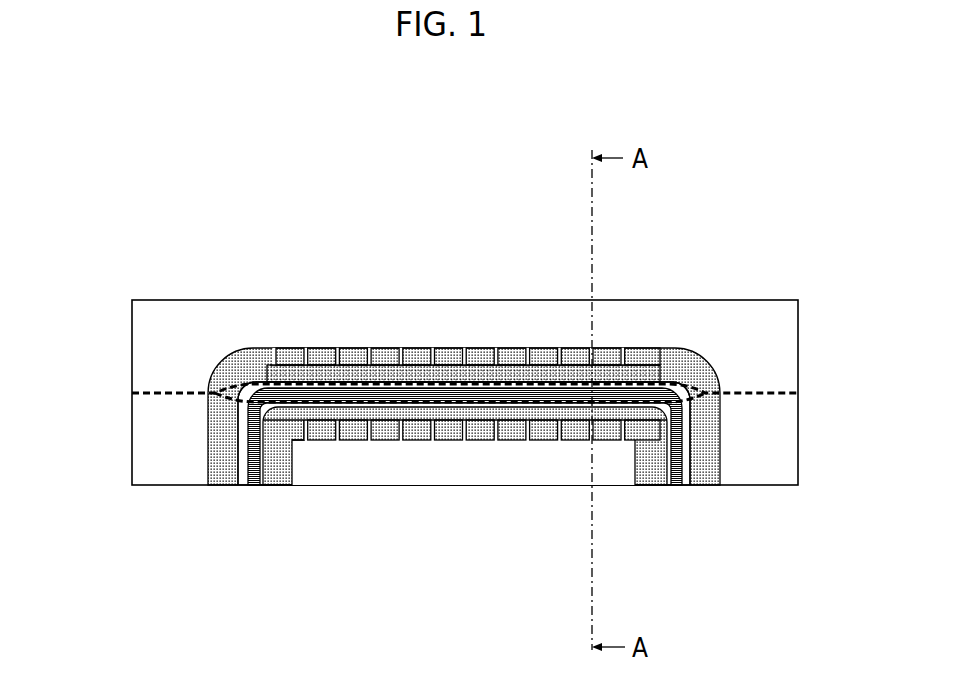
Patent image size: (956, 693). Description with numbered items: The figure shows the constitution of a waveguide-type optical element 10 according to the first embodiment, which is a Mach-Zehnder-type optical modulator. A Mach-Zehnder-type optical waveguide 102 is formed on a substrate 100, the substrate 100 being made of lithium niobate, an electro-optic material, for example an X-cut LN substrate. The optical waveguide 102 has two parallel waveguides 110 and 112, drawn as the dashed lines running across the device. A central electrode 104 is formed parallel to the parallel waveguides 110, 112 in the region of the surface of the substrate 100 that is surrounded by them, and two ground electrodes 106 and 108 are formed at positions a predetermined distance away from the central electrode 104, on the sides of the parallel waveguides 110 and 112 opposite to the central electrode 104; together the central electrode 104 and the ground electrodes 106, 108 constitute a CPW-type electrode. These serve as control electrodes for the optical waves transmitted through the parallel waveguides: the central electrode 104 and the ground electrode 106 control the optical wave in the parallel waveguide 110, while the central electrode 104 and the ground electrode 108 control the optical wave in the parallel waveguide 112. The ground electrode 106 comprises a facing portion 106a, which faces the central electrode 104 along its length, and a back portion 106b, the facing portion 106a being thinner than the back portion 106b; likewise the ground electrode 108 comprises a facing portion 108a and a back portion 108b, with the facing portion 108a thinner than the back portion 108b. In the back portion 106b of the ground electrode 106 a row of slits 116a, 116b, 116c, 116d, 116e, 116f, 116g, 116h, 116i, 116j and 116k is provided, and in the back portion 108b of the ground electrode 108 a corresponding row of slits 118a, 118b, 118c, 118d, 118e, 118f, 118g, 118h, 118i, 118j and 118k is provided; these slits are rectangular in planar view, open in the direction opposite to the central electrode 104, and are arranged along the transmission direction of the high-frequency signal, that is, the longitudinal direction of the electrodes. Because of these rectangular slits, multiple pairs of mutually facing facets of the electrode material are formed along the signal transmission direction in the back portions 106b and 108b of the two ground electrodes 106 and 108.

The waveguide-type optical element 10 is at (157, 207).
The substrate 100 is at (144, 308).
The Mach-Zehnder-type optical waveguide 102 is at (128, 391).
The central electrode 104 is at (272, 380).
The ground electrode 106 is at (752, 255).
The facing portion 106a is at (661, 373).
The back portion 106b is at (638, 355).
The ground electrode 108 is at (760, 543).
The facing portion 108a is at (668, 440).
The back portion 108b is at (640, 430).
The parallel waveguide 110 is at (243, 385).
The parallel waveguide 112 is at (227, 405).
The slit 116a is at (304, 348).
The slit 116b is at (336, 348).
The slit 116c is at (367, 348).
The slit 116d is at (399, 348).
The slit 116e is at (431, 348).
The slit 116f is at (462, 348).
The slit 116g is at (494, 348).
The slit 116h is at (526, 348).
The slit 116i is at (558, 348).
The slit 116j is at (589, 348).
The slit 116k is at (625, 348).
The slit 118a is at (304, 440).
The slit 118b is at (336, 440).
The slit 118c is at (367, 440).
The slit 118d is at (399, 440).
The slit 118e is at (431, 440).
The slit 118f is at (462, 440).
The slit 118g is at (494, 440).
The slit 118h is at (526, 440).
The slit 118i is at (558, 440).
The slit 118j is at (589, 440).
The slit 118k is at (627, 435).